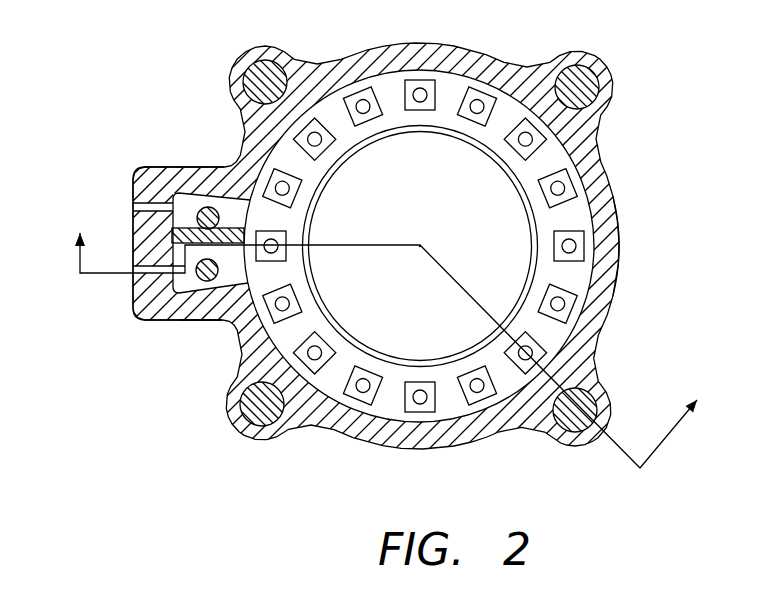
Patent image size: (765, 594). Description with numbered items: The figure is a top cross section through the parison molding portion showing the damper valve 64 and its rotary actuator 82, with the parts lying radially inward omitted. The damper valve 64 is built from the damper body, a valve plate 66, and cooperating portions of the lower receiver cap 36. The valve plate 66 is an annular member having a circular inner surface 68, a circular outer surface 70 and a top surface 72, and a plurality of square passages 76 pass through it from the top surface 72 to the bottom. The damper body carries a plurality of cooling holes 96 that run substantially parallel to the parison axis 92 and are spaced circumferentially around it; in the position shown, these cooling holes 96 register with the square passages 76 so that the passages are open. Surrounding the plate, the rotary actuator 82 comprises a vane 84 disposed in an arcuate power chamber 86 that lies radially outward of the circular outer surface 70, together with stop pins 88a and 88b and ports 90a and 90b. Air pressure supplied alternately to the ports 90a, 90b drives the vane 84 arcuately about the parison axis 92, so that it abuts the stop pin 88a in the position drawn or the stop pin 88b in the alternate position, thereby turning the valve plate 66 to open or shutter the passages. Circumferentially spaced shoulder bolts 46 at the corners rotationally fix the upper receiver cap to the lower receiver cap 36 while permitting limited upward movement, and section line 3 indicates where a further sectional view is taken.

The damper valve 64 is at (633, 58).
The rotary actuator 82 is at (156, 96).
The shoulder bolts 46 is at (599, 104).
The circular outer surface 70 is at (619, 213).
The valve plate 66 is at (572, 280).
The square passages 76 is at (567, 350).
The circular inner surface 68 is at (517, 310).
The top surface 72 is at (452, 360).
The parison axis 92 is at (420, 245).
The cooling holes 96 is at (418, 400).
The arcuate power chamber 86 is at (187, 208).
The stop pin 88a is at (208, 206).
The stop pin 88b is at (213, 283).
The vane 84 is at (133, 229).
The port 90a is at (133, 207).
The port 90b is at (133, 274).
The lower receiver cap 36 is at (197, 322).
The section line 3- 3 is at (393, 335).